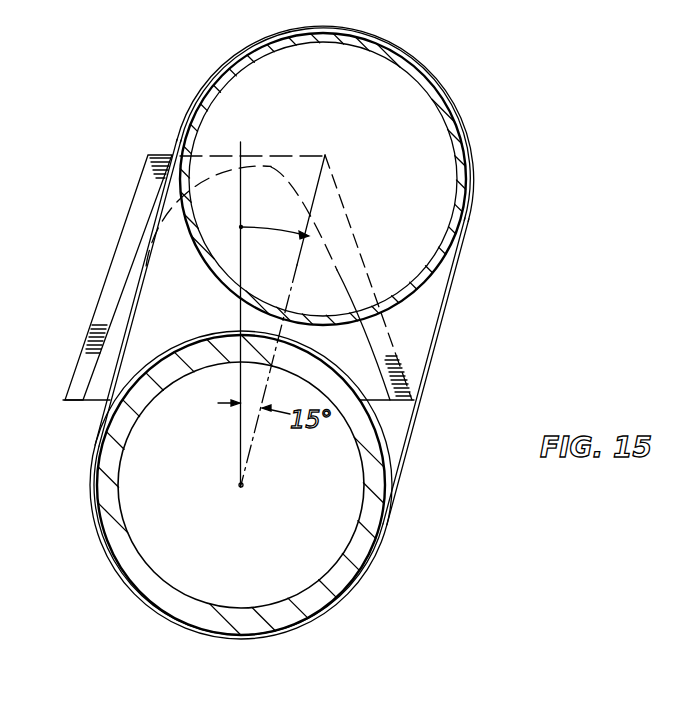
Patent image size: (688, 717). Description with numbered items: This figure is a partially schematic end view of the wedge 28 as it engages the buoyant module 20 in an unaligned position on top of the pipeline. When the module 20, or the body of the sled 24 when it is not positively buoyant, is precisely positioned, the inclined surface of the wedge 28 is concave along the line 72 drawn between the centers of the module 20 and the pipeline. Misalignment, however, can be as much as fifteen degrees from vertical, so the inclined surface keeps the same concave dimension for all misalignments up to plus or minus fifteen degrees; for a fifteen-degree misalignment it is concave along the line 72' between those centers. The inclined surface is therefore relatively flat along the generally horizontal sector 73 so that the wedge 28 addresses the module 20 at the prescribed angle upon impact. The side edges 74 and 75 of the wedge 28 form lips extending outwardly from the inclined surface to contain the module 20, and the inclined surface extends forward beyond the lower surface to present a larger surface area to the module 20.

The module 20 is at (414, 58).
The sled 24 is at (161, 152).
The wedge 28 is at (125, 226).
The side edge 74 is at (108, 298).
The line 72 is at (252, 297).
The line 72' is at (324, 320).
The horizontal sector 73 is at (262, 234).
The side edge 75 is at (357, 268).